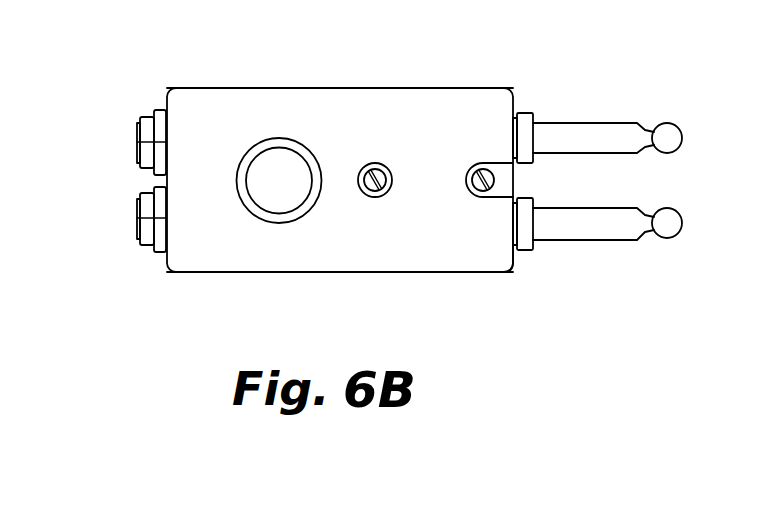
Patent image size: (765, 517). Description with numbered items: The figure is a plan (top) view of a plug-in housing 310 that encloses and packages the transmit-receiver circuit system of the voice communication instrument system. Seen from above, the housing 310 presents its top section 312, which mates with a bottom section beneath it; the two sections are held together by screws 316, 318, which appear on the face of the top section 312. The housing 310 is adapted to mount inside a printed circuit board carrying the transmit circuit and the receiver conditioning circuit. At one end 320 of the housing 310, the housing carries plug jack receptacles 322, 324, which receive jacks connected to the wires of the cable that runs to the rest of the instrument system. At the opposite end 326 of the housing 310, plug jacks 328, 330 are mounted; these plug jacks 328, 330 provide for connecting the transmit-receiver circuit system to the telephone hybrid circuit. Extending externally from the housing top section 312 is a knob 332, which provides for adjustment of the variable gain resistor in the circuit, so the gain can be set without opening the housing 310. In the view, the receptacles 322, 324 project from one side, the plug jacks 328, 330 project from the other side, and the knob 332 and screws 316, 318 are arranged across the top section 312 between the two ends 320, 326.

The plug-in housing 310 is at (432, 49).
The top section 312 is at (186, 98).
The screw 316 is at (393, 136).
The screw 318 is at (491, 175).
The end 320 is at (162, 262).
The plug jack receptacle 322 is at (136, 141).
The plug jack receptacle 324 is at (137, 219).
The end 326 is at (520, 262).
The plug jack 328 is at (575, 208).
The plug jack 330 is at (578, 122).
The knob 332 is at (268, 198).